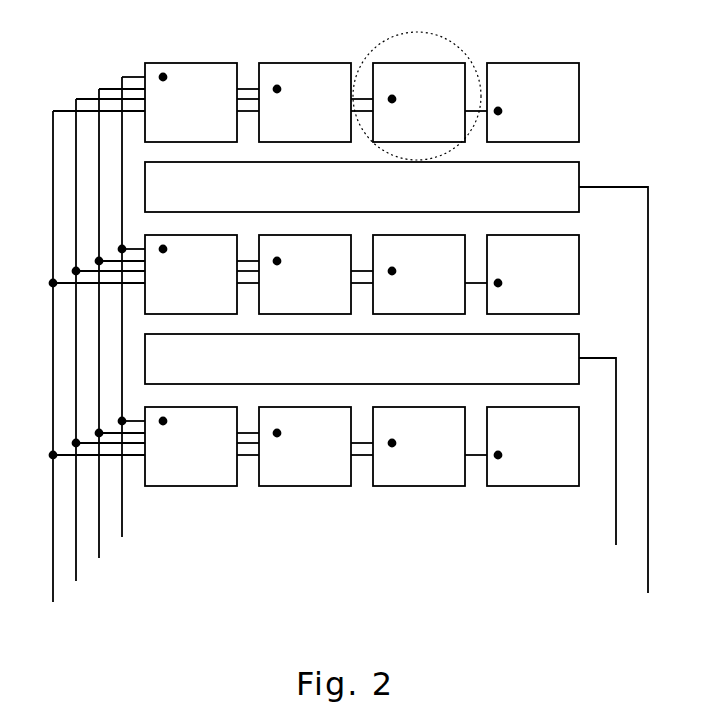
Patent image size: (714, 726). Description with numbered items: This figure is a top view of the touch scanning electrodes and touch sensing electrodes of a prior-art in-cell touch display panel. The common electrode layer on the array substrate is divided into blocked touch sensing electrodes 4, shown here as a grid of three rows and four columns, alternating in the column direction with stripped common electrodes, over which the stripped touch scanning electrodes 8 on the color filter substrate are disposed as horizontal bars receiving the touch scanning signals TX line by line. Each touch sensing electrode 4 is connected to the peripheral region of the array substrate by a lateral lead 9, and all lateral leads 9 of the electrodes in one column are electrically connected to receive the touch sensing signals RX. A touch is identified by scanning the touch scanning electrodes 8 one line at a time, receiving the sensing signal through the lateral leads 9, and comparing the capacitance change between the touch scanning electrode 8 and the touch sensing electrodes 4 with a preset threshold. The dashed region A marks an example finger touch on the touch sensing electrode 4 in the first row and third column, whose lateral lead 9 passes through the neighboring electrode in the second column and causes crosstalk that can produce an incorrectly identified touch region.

The touch sensing electrode 4 is at (212, 73).
The touch scanning electrode 8 is at (568, 171).
The lateral lead 9 is at (128, 68).
The region A is at (462, 45).